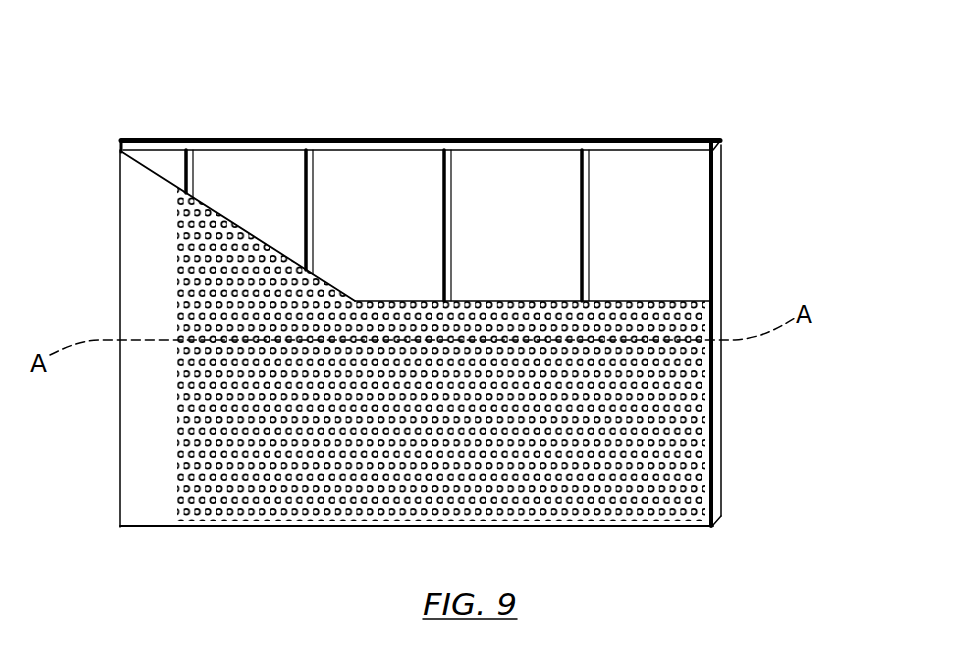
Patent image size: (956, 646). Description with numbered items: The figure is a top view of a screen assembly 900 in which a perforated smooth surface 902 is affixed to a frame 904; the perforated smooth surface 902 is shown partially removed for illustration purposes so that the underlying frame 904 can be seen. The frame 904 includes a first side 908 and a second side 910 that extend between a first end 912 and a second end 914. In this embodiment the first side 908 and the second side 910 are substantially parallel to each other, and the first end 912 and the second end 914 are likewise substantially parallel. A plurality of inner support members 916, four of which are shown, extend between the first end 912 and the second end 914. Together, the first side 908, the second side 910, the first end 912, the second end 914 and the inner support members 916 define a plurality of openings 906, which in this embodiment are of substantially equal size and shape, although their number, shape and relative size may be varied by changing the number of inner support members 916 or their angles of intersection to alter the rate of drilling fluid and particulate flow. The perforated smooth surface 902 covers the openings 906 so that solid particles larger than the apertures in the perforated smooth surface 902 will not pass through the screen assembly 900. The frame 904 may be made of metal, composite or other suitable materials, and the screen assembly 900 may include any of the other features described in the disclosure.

The screen assembly 900 is at (579, 49).
The perforated smooth surface 902 is at (128, 283).
The frame 904 is at (734, 157).
The openings 906 is at (285, 160).
The first side 908 is at (121, 451).
The second side 910 is at (712, 452).
The first end 912 is at (178, 142).
The second end 914 is at (600, 528).
The inner support members 916 is at (594, 175).